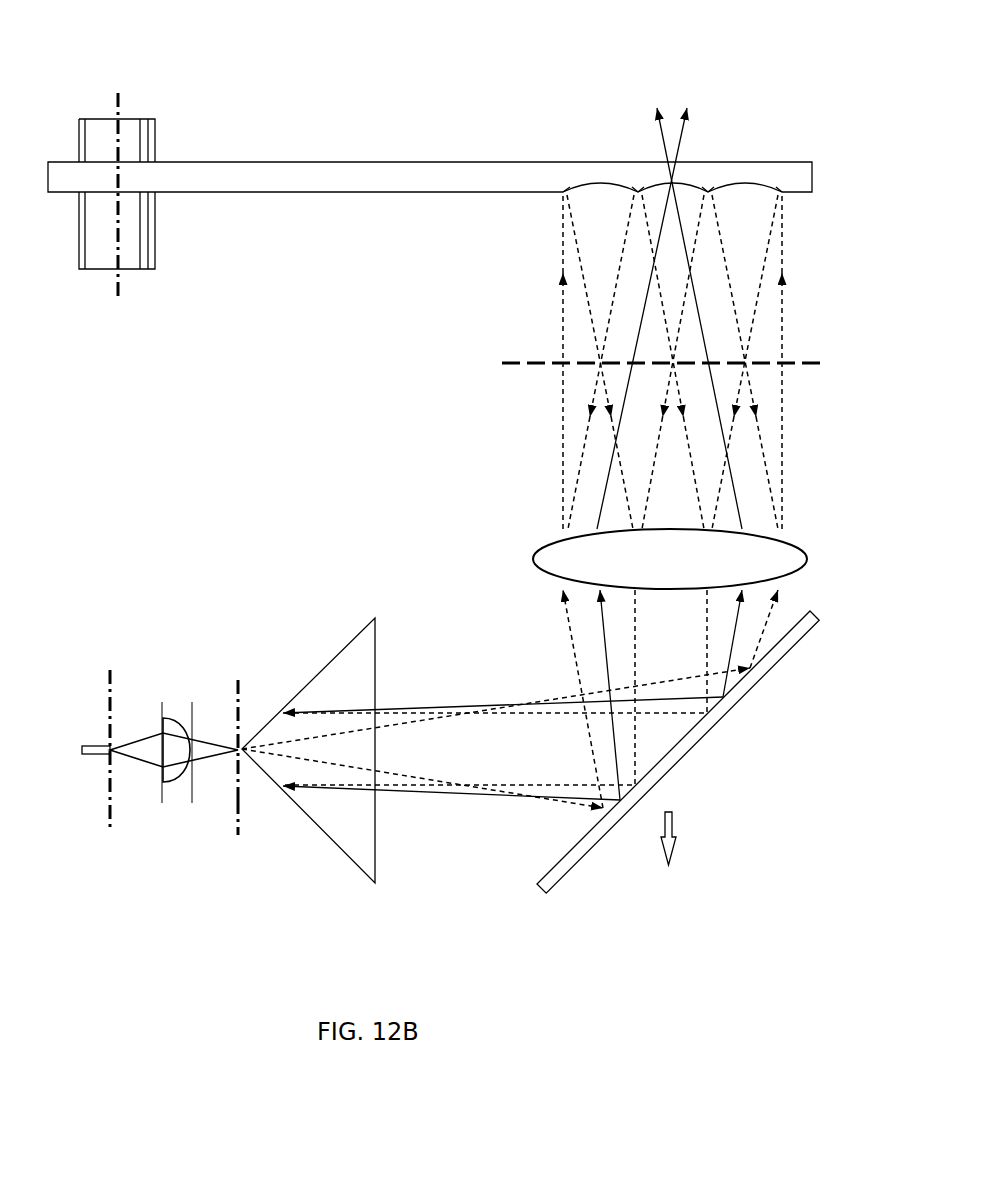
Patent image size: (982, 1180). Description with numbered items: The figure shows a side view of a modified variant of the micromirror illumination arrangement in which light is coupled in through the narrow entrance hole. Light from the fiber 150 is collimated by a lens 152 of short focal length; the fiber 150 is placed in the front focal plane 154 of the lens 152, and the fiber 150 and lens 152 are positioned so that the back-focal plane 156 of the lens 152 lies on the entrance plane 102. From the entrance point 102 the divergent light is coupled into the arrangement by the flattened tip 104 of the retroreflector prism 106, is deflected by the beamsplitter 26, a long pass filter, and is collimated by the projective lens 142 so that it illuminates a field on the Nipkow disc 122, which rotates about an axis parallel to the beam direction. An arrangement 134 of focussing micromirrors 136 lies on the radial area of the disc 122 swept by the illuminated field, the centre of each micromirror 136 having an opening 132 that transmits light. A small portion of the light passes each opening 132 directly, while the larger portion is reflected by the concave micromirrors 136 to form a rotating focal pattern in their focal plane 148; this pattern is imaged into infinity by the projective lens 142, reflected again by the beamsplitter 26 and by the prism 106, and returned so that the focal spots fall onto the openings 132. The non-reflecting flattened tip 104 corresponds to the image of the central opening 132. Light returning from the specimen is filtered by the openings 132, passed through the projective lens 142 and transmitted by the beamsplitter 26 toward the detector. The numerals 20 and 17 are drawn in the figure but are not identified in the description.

The Nipkow disc 122 is at (262, 158).
The rotation axis hub 20 is at (118, 282).
The opening 132 is at (600, 183).
The arrangement of focussing micromirrors 134 is at (695, 176).
The focussing micromirror 136 is at (575, 184).
The focal plane 148 is at (530, 362).
The projective lens 142 is at (563, 560).
The beamsplitter 26 is at (695, 732).
The scan direction arrow 17 is at (673, 855).
The retroreflector prism 106 is at (307, 830).
The entrance point 102 is at (242, 746).
The flattened tip 104 is at (242, 757).
The back-focal plane 156 is at (237, 806).
The lens 152 is at (175, 723).
The fiber 150 is at (92, 747).
The front focal plane 154 is at (110, 818).